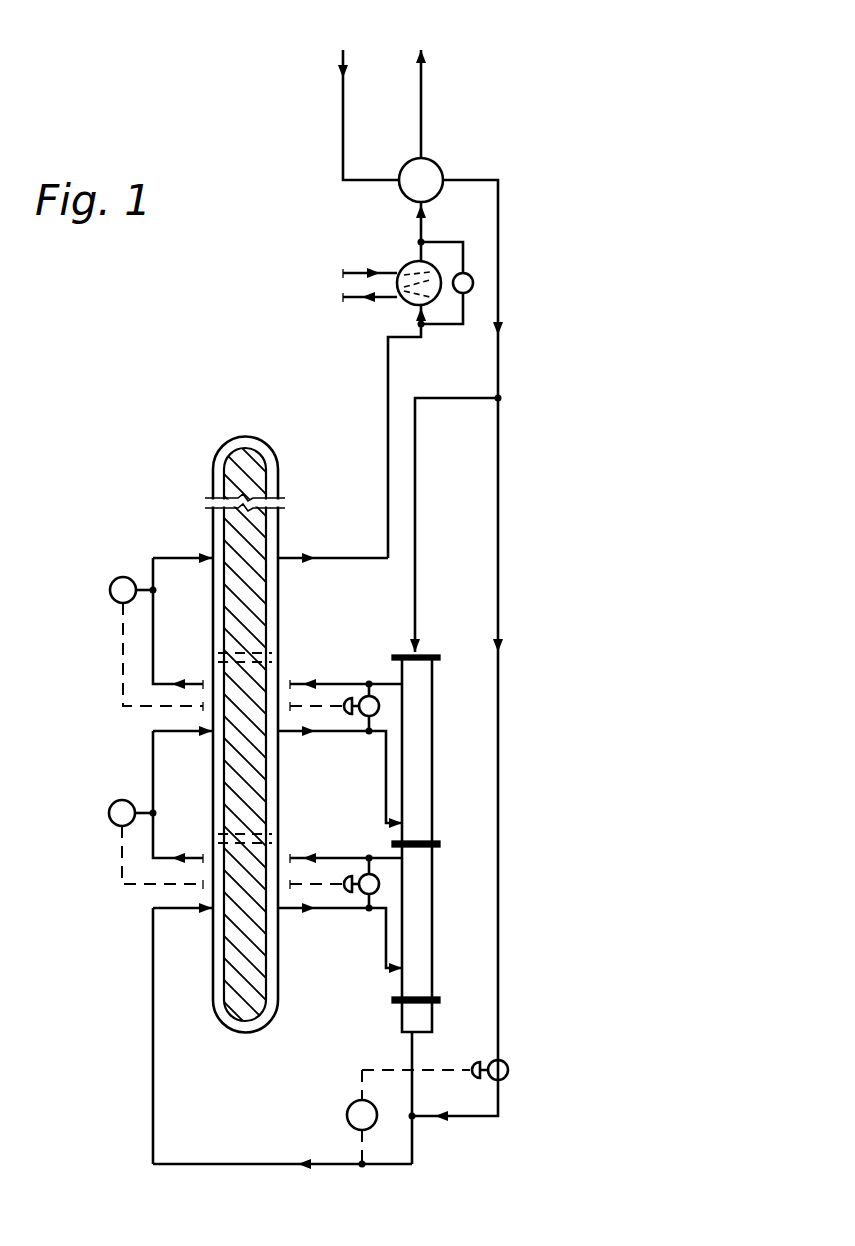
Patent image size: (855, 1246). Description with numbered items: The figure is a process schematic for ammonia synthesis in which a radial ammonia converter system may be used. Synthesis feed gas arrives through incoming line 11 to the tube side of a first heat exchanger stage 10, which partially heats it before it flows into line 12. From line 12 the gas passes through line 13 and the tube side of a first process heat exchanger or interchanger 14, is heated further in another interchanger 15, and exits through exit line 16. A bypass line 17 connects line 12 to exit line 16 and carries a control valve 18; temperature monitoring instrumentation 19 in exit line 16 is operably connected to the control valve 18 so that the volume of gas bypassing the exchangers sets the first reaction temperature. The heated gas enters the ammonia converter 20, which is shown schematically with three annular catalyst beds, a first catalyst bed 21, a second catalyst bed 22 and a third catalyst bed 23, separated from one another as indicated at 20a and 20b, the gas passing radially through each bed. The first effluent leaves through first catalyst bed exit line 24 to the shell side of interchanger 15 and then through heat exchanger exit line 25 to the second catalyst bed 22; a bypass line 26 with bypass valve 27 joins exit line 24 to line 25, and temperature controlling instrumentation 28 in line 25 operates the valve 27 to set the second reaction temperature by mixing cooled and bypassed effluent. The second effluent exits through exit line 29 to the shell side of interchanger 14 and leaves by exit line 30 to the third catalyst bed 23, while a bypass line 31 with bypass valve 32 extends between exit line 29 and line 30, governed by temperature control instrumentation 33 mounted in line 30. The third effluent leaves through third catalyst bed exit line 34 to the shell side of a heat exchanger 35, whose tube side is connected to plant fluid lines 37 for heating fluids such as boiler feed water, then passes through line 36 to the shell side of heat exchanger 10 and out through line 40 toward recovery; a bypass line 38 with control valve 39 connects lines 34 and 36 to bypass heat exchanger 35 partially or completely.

The first heat exchanger stage 10 is at (437, 164).
The incoming line 11 is at (343, 107).
The feed line 12 is at (500, 303).
The line 13 is at (417, 527).
The first process heat exchanger or interchanger 14 is at (418, 678).
The heat exchanger or interchanger 15 is at (420, 950).
The exit line 16 is at (212, 1162).
The bypass line 17 is at (500, 757).
The control valve 18 is at (508, 1068).
The temperature monitoring instrumentation 19 is at (347, 1110).
The ammonia converter 20 is at (205, 477).
The catalyst bed separation 20a is at (270, 838).
The catalyst bed separation 20b is at (270, 657).
The first catalyst bed 21 is at (237, 974).
The second catalyst bed 22 is at (237, 770).
The third catalyst bed 23 is at (237, 597).
The first catalyst bed exit line 24 is at (322, 913).
The heat exchanger exit line 25 is at (330, 856).
The bypass line 26 is at (369, 857).
The bypass valve 27 is at (380, 883).
The temperature controlling instrumentation 28 is at (109, 813).
The exit line 29 is at (325, 735).
The exit line 30 is at (327, 682).
The bypass line 31 is at (369, 683).
The bypass valve 32 is at (380, 704).
The temperature control instrumentation 33 is at (110, 590).
The third catalyst bed exit line 34 is at (340, 556).
The heat exchanger 35 is at (408, 262).
The line 36 is at (423, 228).
The plant fluid lines 37 is at (362, 272).
The bypass line 38 is at (437, 327).
The control valve 39 is at (470, 272).
The line 40 is at (421, 105).